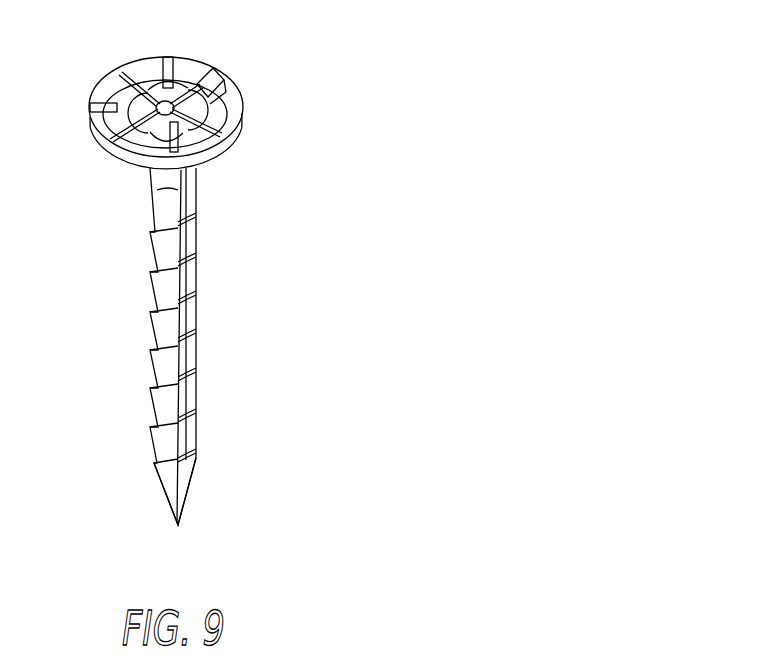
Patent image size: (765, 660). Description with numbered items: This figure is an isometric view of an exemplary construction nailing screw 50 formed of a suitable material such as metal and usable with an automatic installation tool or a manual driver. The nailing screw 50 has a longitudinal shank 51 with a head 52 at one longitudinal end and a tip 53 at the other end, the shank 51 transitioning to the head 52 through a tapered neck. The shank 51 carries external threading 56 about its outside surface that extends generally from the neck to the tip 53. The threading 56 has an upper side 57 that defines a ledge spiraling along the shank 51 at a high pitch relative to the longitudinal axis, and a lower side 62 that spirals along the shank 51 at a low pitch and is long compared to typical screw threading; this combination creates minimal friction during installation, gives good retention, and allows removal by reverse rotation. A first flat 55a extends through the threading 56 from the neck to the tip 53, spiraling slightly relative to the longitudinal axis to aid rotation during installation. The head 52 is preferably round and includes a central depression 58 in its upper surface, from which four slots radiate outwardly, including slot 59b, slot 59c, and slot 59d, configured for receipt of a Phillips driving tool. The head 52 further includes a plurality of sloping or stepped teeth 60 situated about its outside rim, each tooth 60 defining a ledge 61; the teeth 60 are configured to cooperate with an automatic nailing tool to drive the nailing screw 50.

The nailing screw 50 is at (404, 95).
The shank 51 is at (210, 346).
The head 52 is at (252, 121).
The tip 53 is at (180, 527).
The first flat 55a is at (176, 288).
The external threading 56 is at (150, 298).
The upper side 57 is at (152, 262).
The central depression 58 is at (173, 96).
The slot 59b is at (223, 93).
The slot 59c is at (212, 150).
The slot 59d is at (132, 148).
The teeth 60 is at (115, 83).
The ledge 61 is at (104, 124).
The lower side 62 is at (195, 311).